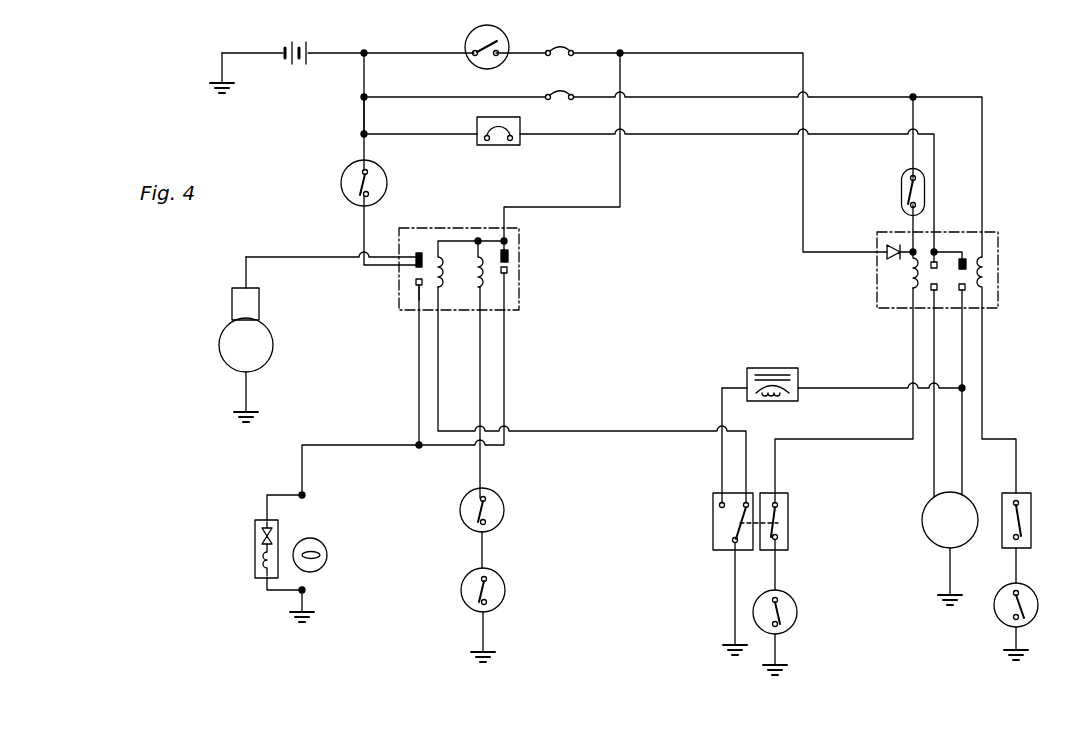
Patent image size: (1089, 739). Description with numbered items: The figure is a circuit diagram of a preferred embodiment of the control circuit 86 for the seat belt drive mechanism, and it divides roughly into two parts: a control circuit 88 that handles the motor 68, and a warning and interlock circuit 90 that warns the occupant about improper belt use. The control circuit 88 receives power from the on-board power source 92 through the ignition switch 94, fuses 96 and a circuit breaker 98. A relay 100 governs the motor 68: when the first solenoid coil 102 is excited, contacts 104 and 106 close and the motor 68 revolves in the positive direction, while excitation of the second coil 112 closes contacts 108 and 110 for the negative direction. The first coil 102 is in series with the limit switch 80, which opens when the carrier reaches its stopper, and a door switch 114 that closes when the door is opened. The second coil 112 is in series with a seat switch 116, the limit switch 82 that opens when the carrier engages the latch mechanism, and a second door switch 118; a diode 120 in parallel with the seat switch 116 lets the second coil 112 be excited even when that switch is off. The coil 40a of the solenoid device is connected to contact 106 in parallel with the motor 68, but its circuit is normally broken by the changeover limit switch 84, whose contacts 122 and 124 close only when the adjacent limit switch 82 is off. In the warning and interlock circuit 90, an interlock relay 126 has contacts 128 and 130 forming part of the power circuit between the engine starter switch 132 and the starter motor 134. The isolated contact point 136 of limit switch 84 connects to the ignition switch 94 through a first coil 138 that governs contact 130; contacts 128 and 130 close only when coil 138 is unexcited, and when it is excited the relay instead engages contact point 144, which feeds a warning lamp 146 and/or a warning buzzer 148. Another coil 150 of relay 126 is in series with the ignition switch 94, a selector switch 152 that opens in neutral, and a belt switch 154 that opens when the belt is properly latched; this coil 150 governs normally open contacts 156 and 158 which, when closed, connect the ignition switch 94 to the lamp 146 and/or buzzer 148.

The coil 40a is at (766, 368).
The motor 68 is at (922, 521).
The limit switch 80 is at (1031, 505).
The limit switch 82 is at (790, 510).
The limit switch 84 is at (713, 529).
The control circuit 86 is at (911, 86).
The control circuit 88 is at (801, 293).
The warning and interlock circuit 90 is at (410, 393).
The power source 92 is at (288, 62).
The ignition switch 94 is at (467, 38).
The fuses 96 is at (567, 50).
The circuit breaker 98 is at (512, 146).
The relay 100 is at (997, 222).
The first solenoid coil 102 is at (987, 272).
The contact 104 is at (963, 258).
The contact 106 is at (965, 292).
The contact 108 is at (937, 262).
The contact 110 is at (932, 292).
The second coil 112 is at (909, 284).
The door switch 114 is at (1036, 600).
The seat switch 116 is at (901, 182).
The second door switch 118 is at (798, 612).
The diode 120 is at (887, 256).
The contact 122 is at (718, 505).
The contact 124 is at (731, 545).
The interlock relay 126 is at (521, 232).
The contact 128 is at (419, 250).
The contact 130 is at (413, 282).
The engine starter switch 132 is at (341, 183).
The starter motor 134 is at (219, 345).
The contact point 136 is at (756, 491).
The first coil 138 is at (447, 268).
The contact point 144 is at (417, 289).
The warning lamp 146 is at (326, 548).
The warning buzzer 148 is at (252, 552).
The coil 150 is at (482, 258).
The selector switch 152 is at (505, 513).
The belt switch 154 is at (505, 590).
The contact 156 is at (508, 257).
The contact 158 is at (505, 275).